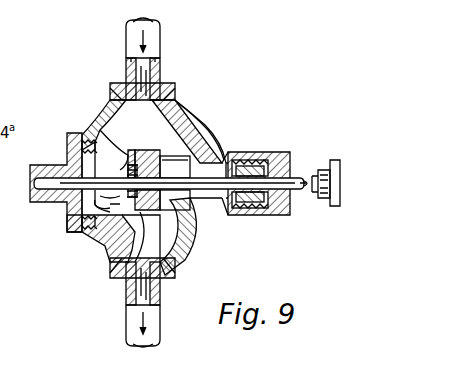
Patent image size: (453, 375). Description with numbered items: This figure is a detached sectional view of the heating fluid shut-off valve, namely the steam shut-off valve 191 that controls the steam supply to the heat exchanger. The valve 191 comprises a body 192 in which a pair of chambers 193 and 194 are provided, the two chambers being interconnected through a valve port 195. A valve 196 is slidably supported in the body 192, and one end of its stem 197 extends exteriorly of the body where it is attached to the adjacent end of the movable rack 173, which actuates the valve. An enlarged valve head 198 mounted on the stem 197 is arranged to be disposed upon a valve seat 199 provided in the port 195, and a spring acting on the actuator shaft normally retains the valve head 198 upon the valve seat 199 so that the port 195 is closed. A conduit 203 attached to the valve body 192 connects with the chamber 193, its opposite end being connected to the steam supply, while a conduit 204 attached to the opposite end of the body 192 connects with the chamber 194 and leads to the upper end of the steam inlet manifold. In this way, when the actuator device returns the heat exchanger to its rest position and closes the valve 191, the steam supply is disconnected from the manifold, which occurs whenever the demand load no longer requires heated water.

The movable rack 173 is at (330, 210).
The steam shut-off valve 191 is at (186, 127).
The body 192 is at (198, 146).
The chamber 193 is at (118, 131).
The chamber 194 is at (180, 255).
The valve port 195 is at (157, 196).
The valve 196 is at (297, 174).
The stem 197 is at (293, 200).
The valve head 198 is at (130, 200).
The valve seat 199 is at (82, 175).
The conduit 203 is at (126, 37).
The conduit 204 is at (128, 333).